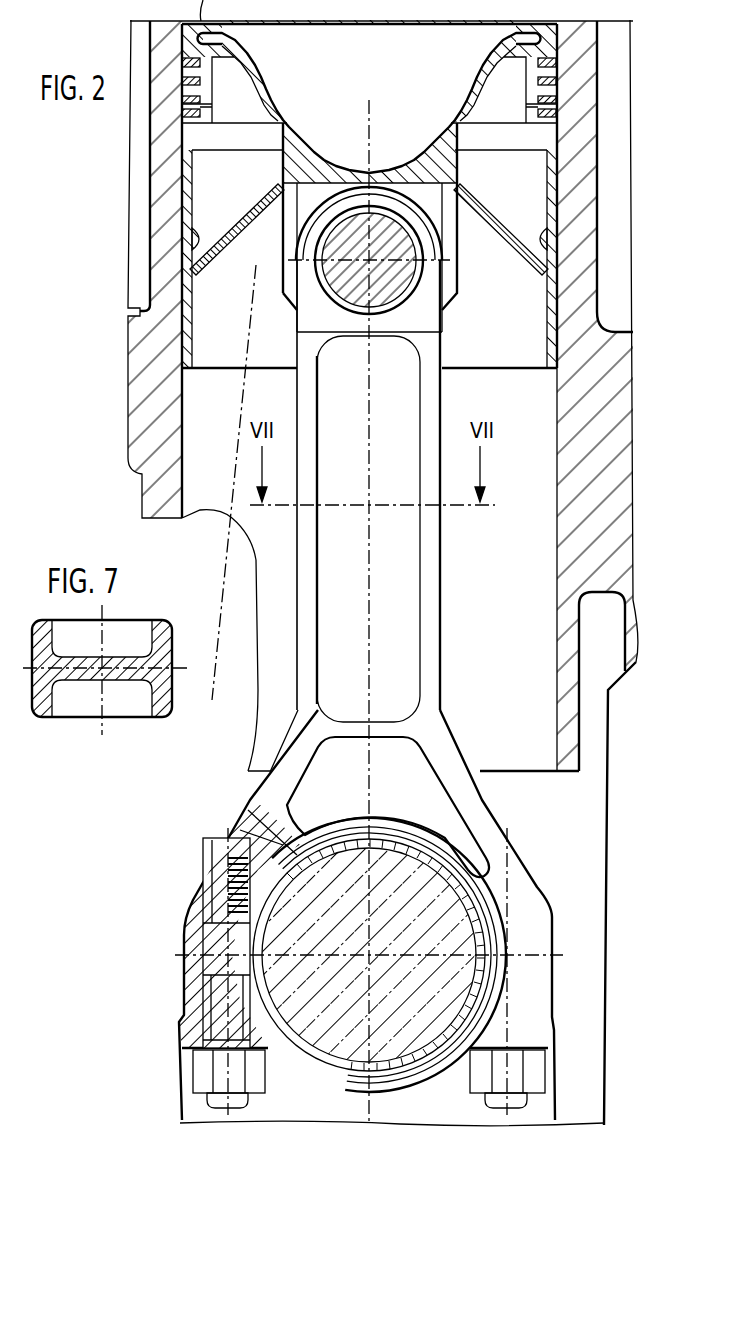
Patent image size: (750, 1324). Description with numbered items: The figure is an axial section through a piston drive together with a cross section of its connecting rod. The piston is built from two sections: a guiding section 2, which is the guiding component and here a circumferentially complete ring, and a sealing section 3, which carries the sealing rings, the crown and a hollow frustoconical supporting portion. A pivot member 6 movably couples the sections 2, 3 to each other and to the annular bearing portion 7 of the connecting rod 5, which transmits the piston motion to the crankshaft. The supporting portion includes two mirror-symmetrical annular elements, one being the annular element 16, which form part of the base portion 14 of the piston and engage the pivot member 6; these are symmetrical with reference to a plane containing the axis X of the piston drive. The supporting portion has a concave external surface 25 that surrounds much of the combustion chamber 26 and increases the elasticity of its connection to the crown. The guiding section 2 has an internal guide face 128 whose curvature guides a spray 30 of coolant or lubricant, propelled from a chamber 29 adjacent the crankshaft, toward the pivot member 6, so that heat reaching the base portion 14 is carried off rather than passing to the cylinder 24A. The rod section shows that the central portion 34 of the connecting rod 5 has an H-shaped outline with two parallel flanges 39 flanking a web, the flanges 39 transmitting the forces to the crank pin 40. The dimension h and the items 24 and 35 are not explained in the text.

In FIG. 2, the compression height h is at (186, 36).
In FIG. 2, the axis X is at (370, 70).
In FIG. 2, the guiding section 2 is at (502, 348).
In FIG. 2, the sealing section 3 is at (503, 117).
In FIG. 2, the connecting rod 5 is at (441, 679).
In FIG. 7, the connecting rod 5 is at (83, 718).
In FIG. 2, the pivot member 6 is at (356, 292).
In FIG. 2, the bearing portion 7 is at (385, 318).
In FIG. 2, the base portion 14 is at (280, 264).
In FIG. 2, the annular element 16 is at (286, 302).
In FIG. 2, the cylinder liner 24 is at (172, 430).
In FIG. 2, the cylinder 24A is at (600, 258).
In FIG. 2, the concave external surface 25 is at (258, 78).
In FIG. 2, the combustion chamber 26 is at (334, 112).
In FIG. 2, the chamber 29 is at (556, 828).
In FIG. 2, the spray 30 is at (222, 601).
In FIG. 2, the central portion 34 is at (412, 633).
In FIG. 7, the central portion 34 is at (133, 681).
In FIG. 2, the piston crown 35 is at (434, 125).
In FIG. 2, the flanges 39 is at (433, 577).
In FIG. 7, the flanges 39 is at (42, 710).
In FIG. 2, the crank pin 40 is at (455, 922).
In FIG. 2, the guide face 128 is at (258, 205).